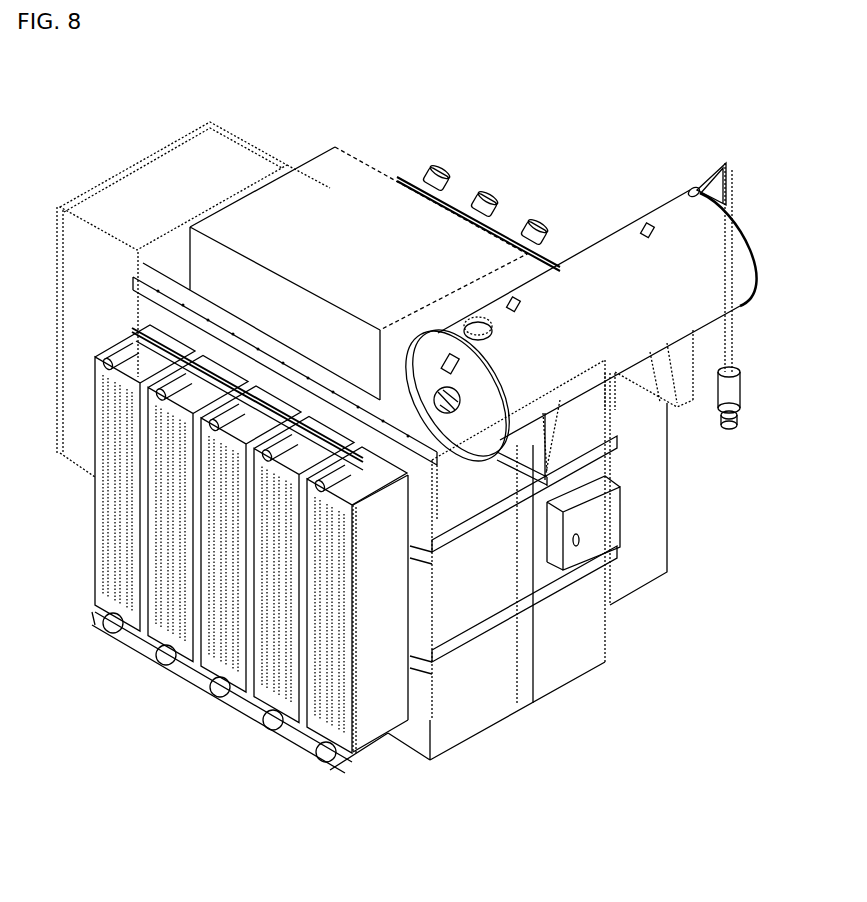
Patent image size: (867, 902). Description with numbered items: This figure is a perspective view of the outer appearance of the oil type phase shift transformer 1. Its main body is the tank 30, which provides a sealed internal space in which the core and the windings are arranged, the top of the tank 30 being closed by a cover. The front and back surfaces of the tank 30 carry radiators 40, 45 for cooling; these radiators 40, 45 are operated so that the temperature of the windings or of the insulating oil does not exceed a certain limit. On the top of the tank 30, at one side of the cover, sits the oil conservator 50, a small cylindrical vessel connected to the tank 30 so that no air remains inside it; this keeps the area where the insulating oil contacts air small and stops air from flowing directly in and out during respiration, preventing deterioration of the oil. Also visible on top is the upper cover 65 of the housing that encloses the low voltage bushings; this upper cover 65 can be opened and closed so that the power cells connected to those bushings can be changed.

The oil type phase shift transformer 1 is at (553, 141).
The tank 30 is at (485, 702).
The radiator 40 is at (652, 485).
The radiator 45 is at (100, 527).
The oil conservator 50 is at (607, 255).
The upper cover 65 is at (349, 165).